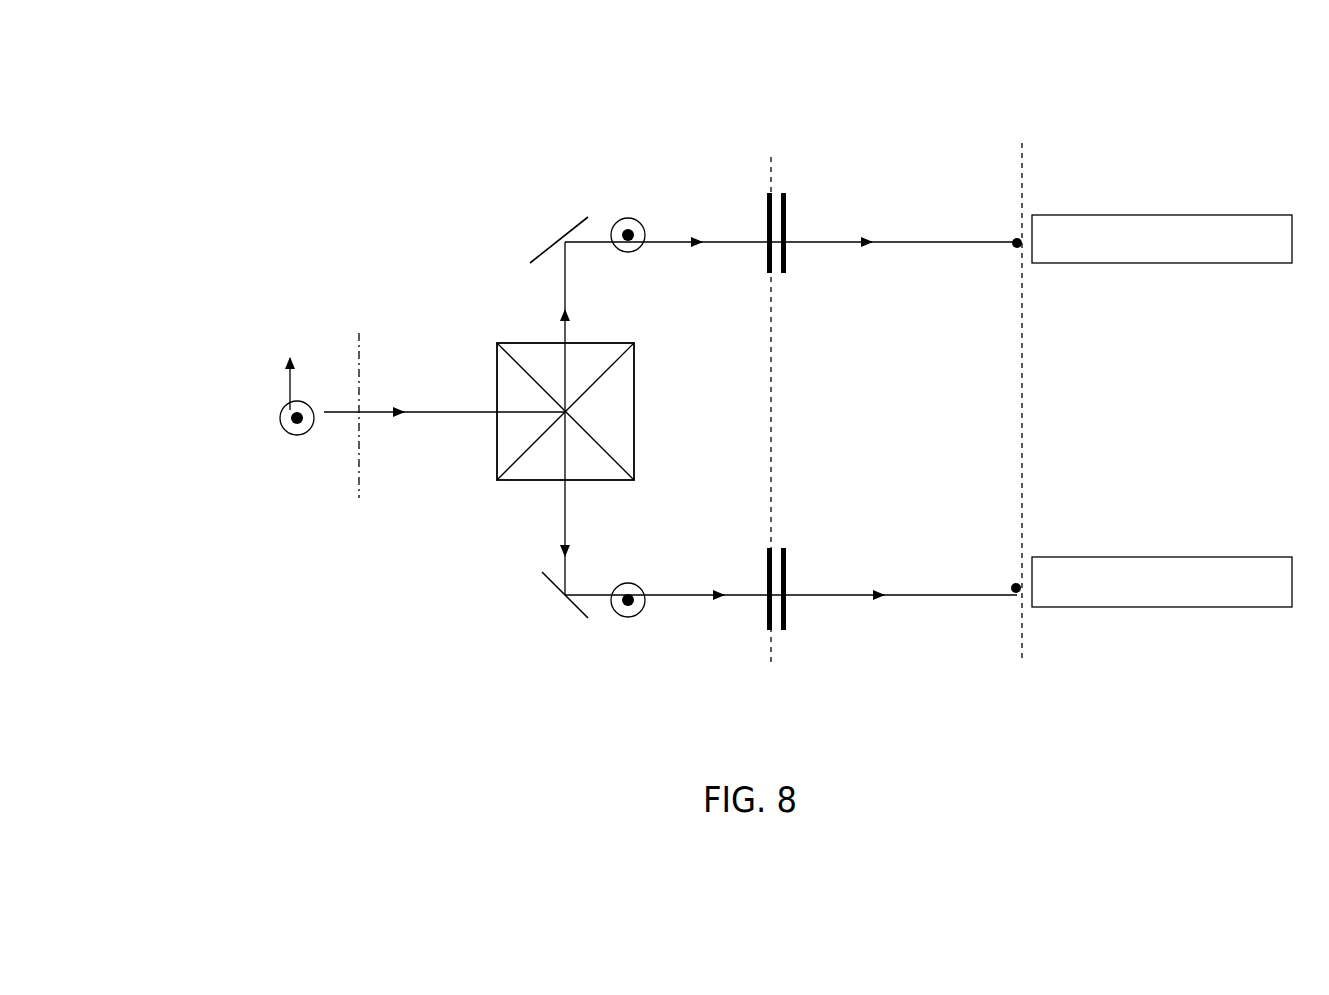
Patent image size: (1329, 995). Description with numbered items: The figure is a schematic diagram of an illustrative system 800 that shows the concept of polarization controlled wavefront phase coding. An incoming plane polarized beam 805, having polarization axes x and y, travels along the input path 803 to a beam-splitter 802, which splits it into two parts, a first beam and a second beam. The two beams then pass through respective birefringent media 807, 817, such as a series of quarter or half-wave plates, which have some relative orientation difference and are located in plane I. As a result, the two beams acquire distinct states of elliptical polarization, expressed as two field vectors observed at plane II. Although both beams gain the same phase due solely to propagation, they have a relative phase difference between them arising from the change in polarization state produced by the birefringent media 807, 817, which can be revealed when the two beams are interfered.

The illustrative system 800 is at (471, 146).
The beam-splitter 802 is at (600, 411).
The input light beam 803 is at (444, 393).
The incoming plane polarized beam 805 is at (262, 388).
The birefringent medium 807 is at (798, 210).
The birefringent medium 817 is at (806, 608).